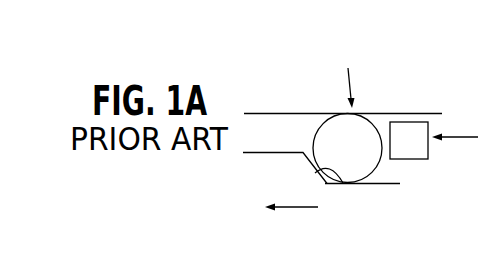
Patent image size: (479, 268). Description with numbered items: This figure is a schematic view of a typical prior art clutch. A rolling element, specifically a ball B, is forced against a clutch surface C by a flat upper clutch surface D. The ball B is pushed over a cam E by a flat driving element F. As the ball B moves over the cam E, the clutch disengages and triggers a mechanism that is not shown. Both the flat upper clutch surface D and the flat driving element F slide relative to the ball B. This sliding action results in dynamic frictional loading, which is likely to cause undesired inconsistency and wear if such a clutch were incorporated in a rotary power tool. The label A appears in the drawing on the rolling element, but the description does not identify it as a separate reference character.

The roller A is at (347, 148).
The ball B is at (313, 137).
The clutch surface C is at (385, 183).
The flat upper clutch surface D is at (268, 113).
The cam E is at (343, 184).
The flat driving element F is at (409, 140).